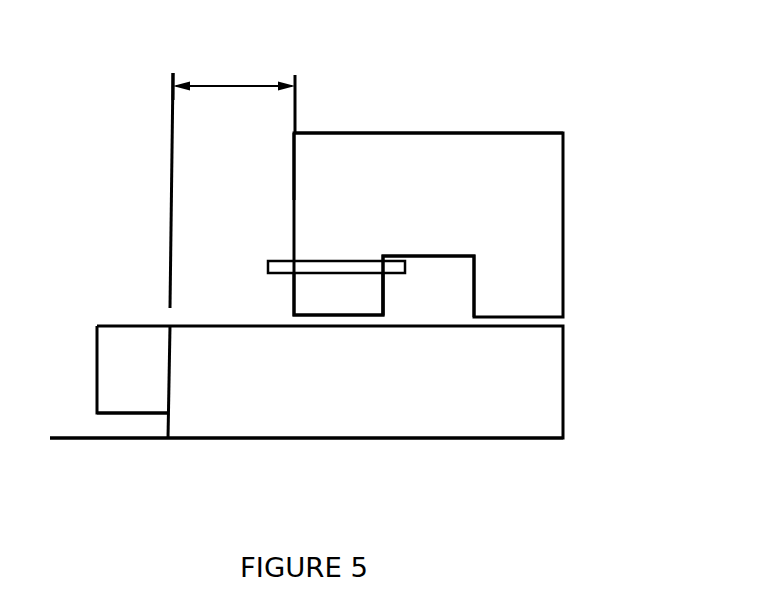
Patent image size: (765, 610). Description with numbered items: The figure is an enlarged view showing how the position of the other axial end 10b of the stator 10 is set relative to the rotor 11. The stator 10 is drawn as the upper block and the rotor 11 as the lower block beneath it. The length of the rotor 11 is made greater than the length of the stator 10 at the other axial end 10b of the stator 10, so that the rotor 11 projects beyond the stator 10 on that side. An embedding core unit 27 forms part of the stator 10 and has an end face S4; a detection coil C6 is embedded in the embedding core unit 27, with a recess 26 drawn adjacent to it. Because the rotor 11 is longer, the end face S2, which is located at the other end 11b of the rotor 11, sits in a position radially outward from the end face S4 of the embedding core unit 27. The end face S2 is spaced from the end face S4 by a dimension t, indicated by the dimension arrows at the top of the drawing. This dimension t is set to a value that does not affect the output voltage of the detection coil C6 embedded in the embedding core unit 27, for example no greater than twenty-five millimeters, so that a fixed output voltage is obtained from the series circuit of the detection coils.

The stator 10 is at (563, 200).
The other axial end of stator 10b is at (363, 150).
The recess 26 is at (475, 300).
The detection coil C6 is at (268, 268).
The embedding core unit 27 is at (337, 316).
The end face of embedding core unit S4 is at (295, 190).
The dimension t is at (231, 86).
The rotor 11 is at (563, 373).
The other end of rotor 11b is at (213, 440).
The end face S2 is at (168, 397).